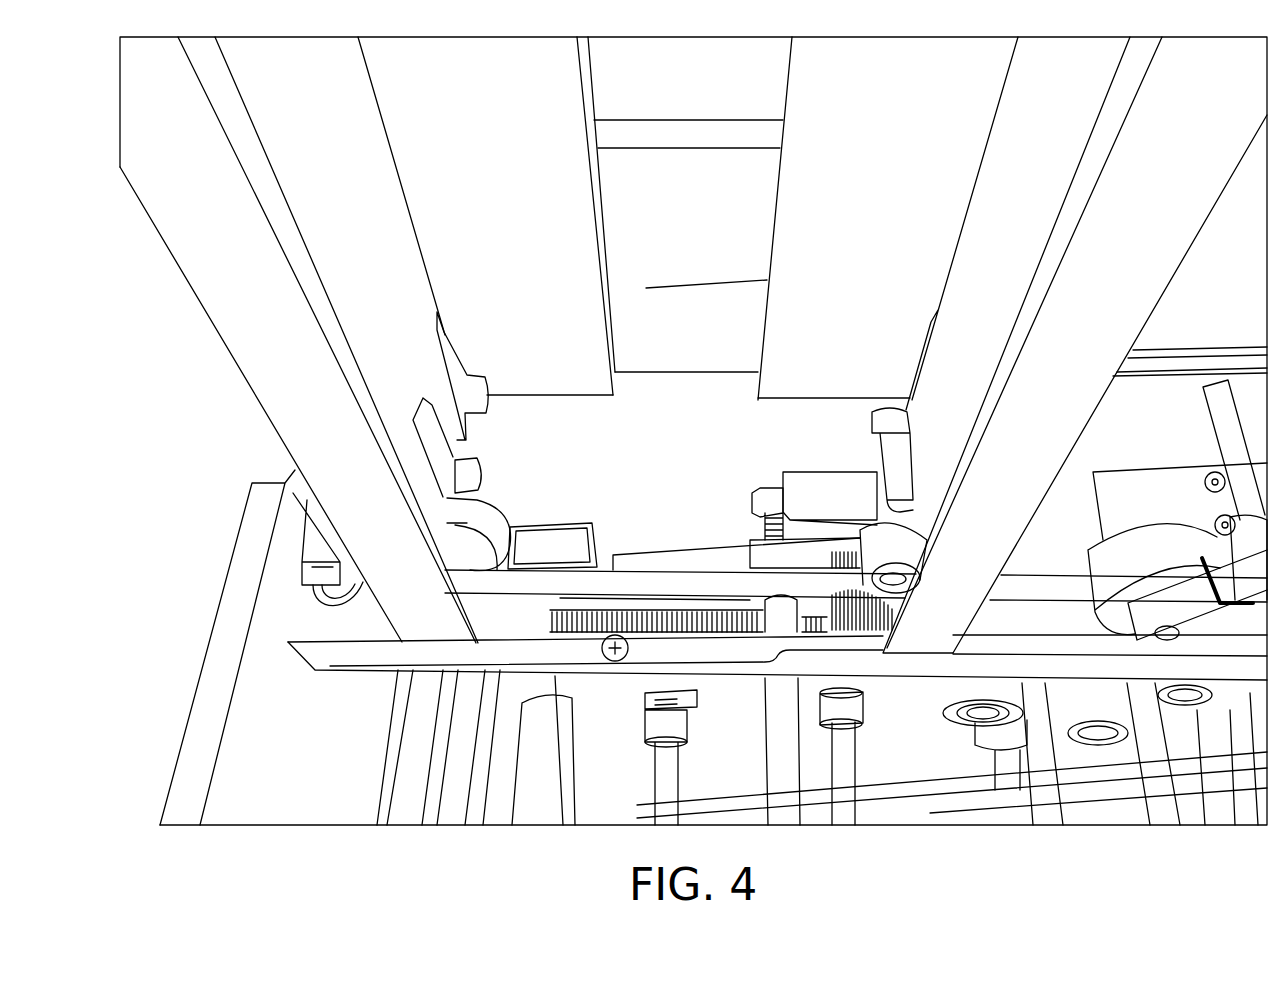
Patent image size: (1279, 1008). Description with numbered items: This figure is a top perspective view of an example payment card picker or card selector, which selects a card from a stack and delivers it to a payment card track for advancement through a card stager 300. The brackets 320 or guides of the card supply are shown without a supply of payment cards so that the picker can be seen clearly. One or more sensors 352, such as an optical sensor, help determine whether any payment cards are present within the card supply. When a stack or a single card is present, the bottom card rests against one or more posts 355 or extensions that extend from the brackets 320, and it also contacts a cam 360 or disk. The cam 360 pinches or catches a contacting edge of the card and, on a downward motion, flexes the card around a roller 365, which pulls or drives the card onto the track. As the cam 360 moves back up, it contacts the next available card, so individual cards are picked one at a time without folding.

The card stager 300 is at (140, 653).
The brackets 320 is at (297, 405).
The sensors 352 is at (538, 543).
The posts 355 is at (477, 405).
The cam 360 is at (892, 480).
The roller 365 is at (878, 540).